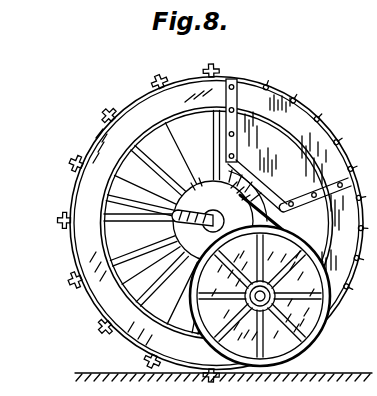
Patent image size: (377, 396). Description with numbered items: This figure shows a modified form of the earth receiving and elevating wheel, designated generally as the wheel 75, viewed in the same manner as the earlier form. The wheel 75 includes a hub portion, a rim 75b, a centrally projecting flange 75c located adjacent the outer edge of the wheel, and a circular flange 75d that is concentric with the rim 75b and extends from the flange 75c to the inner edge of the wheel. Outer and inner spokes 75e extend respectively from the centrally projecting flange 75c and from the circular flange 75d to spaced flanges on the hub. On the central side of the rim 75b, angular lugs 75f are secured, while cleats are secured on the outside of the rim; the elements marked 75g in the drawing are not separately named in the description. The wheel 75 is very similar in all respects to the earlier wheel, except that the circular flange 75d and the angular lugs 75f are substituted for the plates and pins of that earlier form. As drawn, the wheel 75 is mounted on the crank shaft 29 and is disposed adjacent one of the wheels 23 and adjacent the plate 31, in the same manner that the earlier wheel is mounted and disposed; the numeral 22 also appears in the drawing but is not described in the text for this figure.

The elevating wheel 75 is at (72, 259).
The rim 75b is at (97, 139).
The centrally projecting flange 75c is at (62, 219).
The circular flange 75d is at (163, 212).
The outer and inner spokes 75e is at (161, 227).
The angular lugs 75f is at (147, 353).
The cleat lugs 75g is at (160, 86).
The crank shaft 29 is at (202, 196).
The plate 31 is at (297, 135).
The wheels 23 is at (332, 312).
The small supporting wheel 22 is at (280, 305).